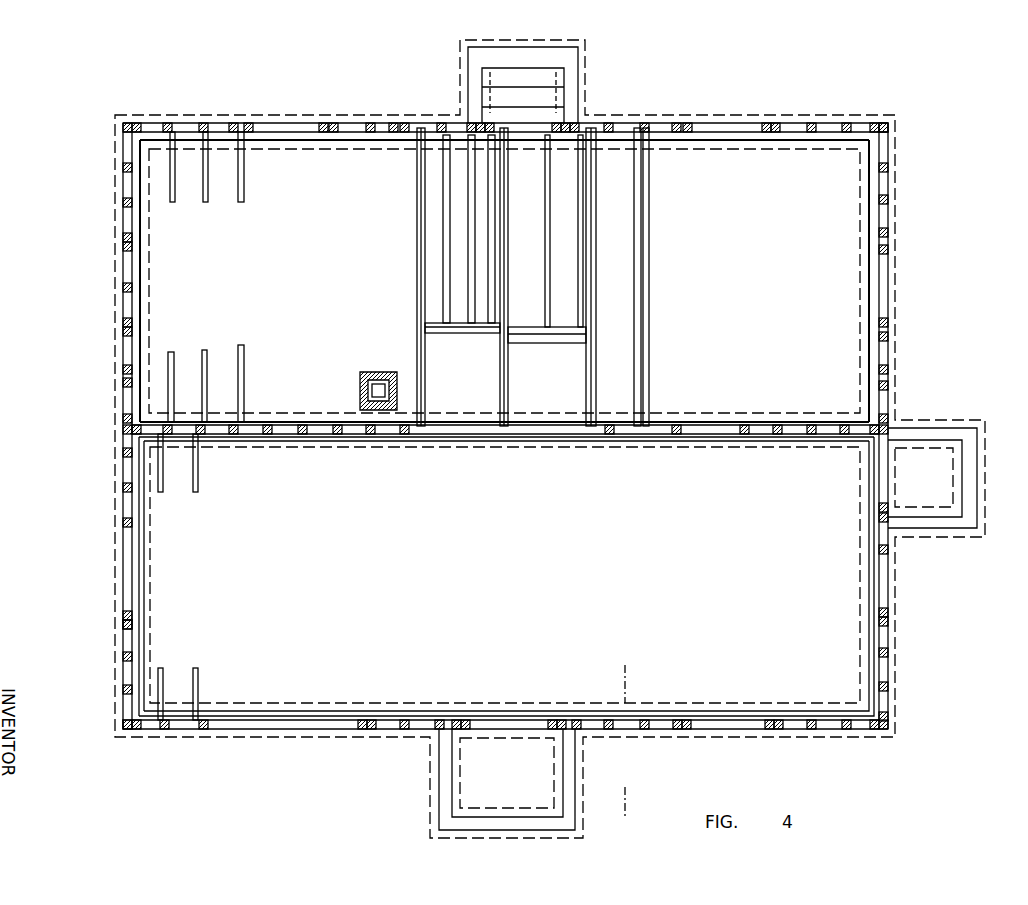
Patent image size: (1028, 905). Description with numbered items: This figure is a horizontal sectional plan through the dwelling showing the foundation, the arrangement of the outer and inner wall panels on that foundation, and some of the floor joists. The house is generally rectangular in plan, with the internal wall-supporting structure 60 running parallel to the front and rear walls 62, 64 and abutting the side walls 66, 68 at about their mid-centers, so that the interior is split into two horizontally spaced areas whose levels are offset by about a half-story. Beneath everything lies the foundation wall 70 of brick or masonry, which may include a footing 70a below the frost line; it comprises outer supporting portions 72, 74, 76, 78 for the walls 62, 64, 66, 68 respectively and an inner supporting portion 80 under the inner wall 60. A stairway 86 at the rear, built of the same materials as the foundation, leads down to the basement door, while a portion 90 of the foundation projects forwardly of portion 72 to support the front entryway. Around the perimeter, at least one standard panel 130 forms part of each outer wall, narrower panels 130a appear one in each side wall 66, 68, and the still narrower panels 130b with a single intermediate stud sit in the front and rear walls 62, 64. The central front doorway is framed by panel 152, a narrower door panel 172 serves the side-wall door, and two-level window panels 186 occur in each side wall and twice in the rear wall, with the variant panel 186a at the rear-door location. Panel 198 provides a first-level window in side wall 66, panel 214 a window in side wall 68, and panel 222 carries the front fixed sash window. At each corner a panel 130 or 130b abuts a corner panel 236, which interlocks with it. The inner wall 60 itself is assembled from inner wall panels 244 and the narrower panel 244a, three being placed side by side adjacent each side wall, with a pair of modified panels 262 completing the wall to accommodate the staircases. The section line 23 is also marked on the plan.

The section line 23 is at (626, 680).
The internal wall-supporting structure 60 is at (323, 422).
The front wall 62 is at (322, 729).
The rear wall 64 is at (318, 125).
The side wall 66 is at (868, 498).
The side wall 68 is at (122, 392).
The foundation wall 70 is at (768, 712).
The footing 70a is at (540, 702).
The outer supporting portion 72 is at (384, 710).
The outer supporting portion 74 is at (358, 143).
The outer supporting portion 76 is at (870, 270).
The outer supporting portion 78 is at (143, 270).
The inner supporting portion 80 is at (538, 440).
The stairway 86 is at (568, 62).
The foundation portion 90 is at (447, 807).
The panel 130 is at (573, 112).
The panel 130a is at (112, 333).
The panel 130b is at (472, 112).
The panel 152 is at (435, 744).
The panel 172 is at (900, 413).
The panel 186 is at (233, 112).
The panel 186a is at (472, 112).
The panel 198 is at (900, 527).
The panel 214 is at (112, 520).
The panel 222 is at (367, 744).
The panel 236 is at (125, 112).
The inner wall panel 244 is at (137, 455).
The inner wall panel 244a is at (337, 455).
The panel 262 is at (608, 455).